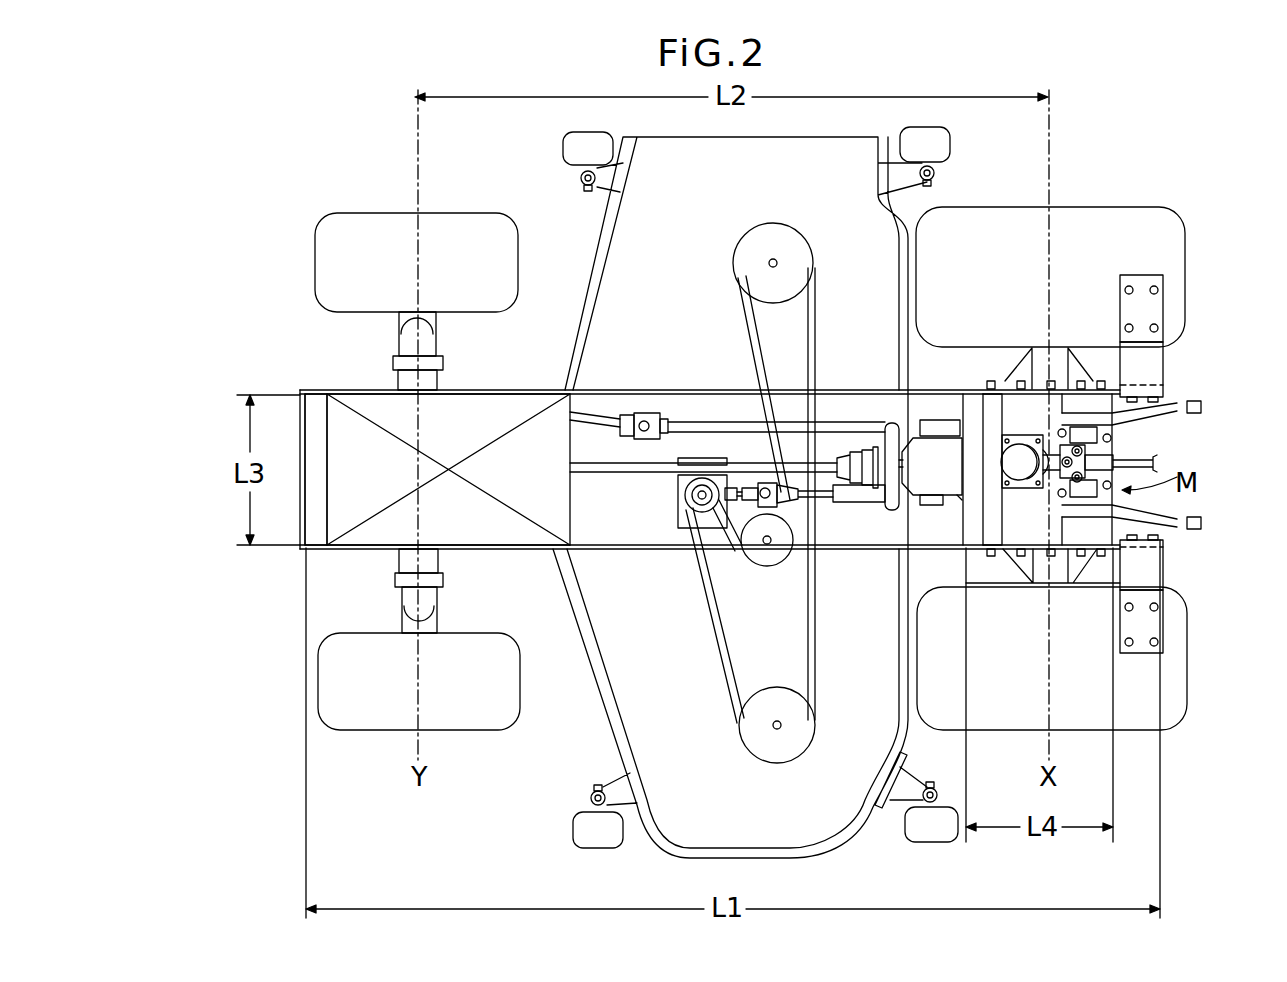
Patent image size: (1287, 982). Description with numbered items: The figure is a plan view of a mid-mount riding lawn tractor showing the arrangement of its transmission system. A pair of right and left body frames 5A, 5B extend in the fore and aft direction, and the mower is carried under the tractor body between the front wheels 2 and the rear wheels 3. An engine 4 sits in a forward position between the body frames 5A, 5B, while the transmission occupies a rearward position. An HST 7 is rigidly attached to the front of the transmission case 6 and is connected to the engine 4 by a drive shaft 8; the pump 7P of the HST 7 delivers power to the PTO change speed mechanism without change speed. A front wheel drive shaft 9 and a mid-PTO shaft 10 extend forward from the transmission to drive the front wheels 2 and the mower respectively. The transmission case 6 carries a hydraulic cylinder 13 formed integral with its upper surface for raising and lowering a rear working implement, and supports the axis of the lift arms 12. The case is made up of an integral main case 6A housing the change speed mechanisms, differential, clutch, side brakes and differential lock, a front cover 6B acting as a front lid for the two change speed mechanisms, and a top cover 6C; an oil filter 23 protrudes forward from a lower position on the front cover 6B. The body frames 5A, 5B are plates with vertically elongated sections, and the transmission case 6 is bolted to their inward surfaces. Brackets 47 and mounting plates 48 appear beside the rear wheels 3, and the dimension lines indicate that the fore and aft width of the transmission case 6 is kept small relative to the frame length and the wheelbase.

The front wheels 2 is at (362, 237).
The rear wheels 3 is at (1170, 250).
The engine 4 is at (478, 408).
The body frame 5A is at (633, 551).
The body frame 5B is at (656, 389).
The transmission case 6 is at (1116, 430).
The main case 6A is at (1103, 549).
The front cover 6B is at (972, 547).
The top cover 6C is at (1017, 478).
The HST 7 is at (958, 500).
The pump 7P is at (941, 450).
The drive shaft 8 is at (618, 473).
The front wheel drive shaft 9 is at (710, 421).
The mid-PTO shaft 10 is at (957, 494).
The lift arms 12 is at (1178, 400).
The hydraulic cylinder 13 is at (1023, 435).
The oil filter 23 is at (920, 406).
The bracket 47 is at (1157, 362).
The mounting plate 48 is at (1127, 307).